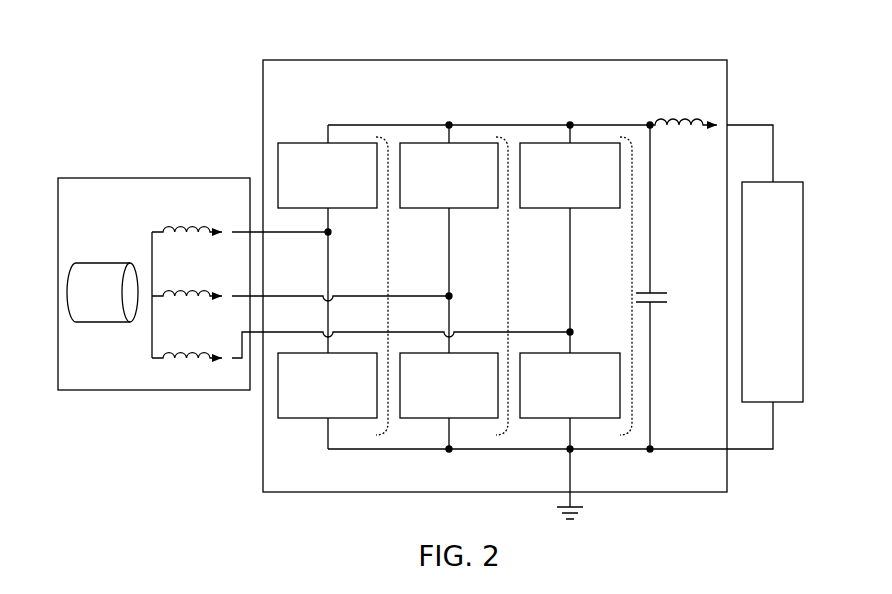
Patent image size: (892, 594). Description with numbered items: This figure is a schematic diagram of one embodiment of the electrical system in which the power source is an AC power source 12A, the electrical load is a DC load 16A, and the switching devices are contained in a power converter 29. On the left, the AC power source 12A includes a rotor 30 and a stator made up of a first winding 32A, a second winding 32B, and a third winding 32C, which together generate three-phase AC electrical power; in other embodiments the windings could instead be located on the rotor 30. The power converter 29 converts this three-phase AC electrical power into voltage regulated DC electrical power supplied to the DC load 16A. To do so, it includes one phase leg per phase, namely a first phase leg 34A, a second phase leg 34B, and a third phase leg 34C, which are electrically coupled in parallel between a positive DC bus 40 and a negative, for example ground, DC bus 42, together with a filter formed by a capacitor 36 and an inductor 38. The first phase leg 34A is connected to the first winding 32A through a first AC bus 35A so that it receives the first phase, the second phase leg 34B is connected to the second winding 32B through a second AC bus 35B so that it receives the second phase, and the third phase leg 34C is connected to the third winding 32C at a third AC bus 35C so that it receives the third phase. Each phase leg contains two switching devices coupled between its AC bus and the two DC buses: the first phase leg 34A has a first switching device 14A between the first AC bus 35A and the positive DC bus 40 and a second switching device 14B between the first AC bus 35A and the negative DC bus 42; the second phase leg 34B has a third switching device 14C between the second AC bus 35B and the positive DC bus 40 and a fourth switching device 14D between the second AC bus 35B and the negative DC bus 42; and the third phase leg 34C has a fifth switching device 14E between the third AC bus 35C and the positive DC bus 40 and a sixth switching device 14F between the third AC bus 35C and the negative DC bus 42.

The power converter 29 is at (476, 60).
The AC power source 12A is at (152, 178).
The rotor 30 is at (97, 262).
The first winding 32A is at (202, 236).
The second winding 32B is at (202, 300).
The third winding 32C is at (205, 363).
The first switching device 14A is at (300, 143).
The second switching device 14B is at (301, 421).
The third switching device 14C is at (422, 143).
The fourth switching device 14D is at (425, 421).
The fifth switching device 14E is at (543, 143).
The sixth switching device 14F is at (545, 421).
The positive DC bus 40 is at (356, 123).
The first AC bus 35A is at (295, 238).
The second AC bus 35B is at (358, 293).
The third AC bus 35C is at (488, 330).
The first phase leg 34A is at (388, 276).
The second phase leg 34B is at (508, 266).
The third phase leg 34C is at (632, 268).
The inductor 38 is at (673, 127).
The capacitor 36 is at (658, 305).
The negative DC bus 42 is at (682, 447).
The DC load 16A is at (752, 181).